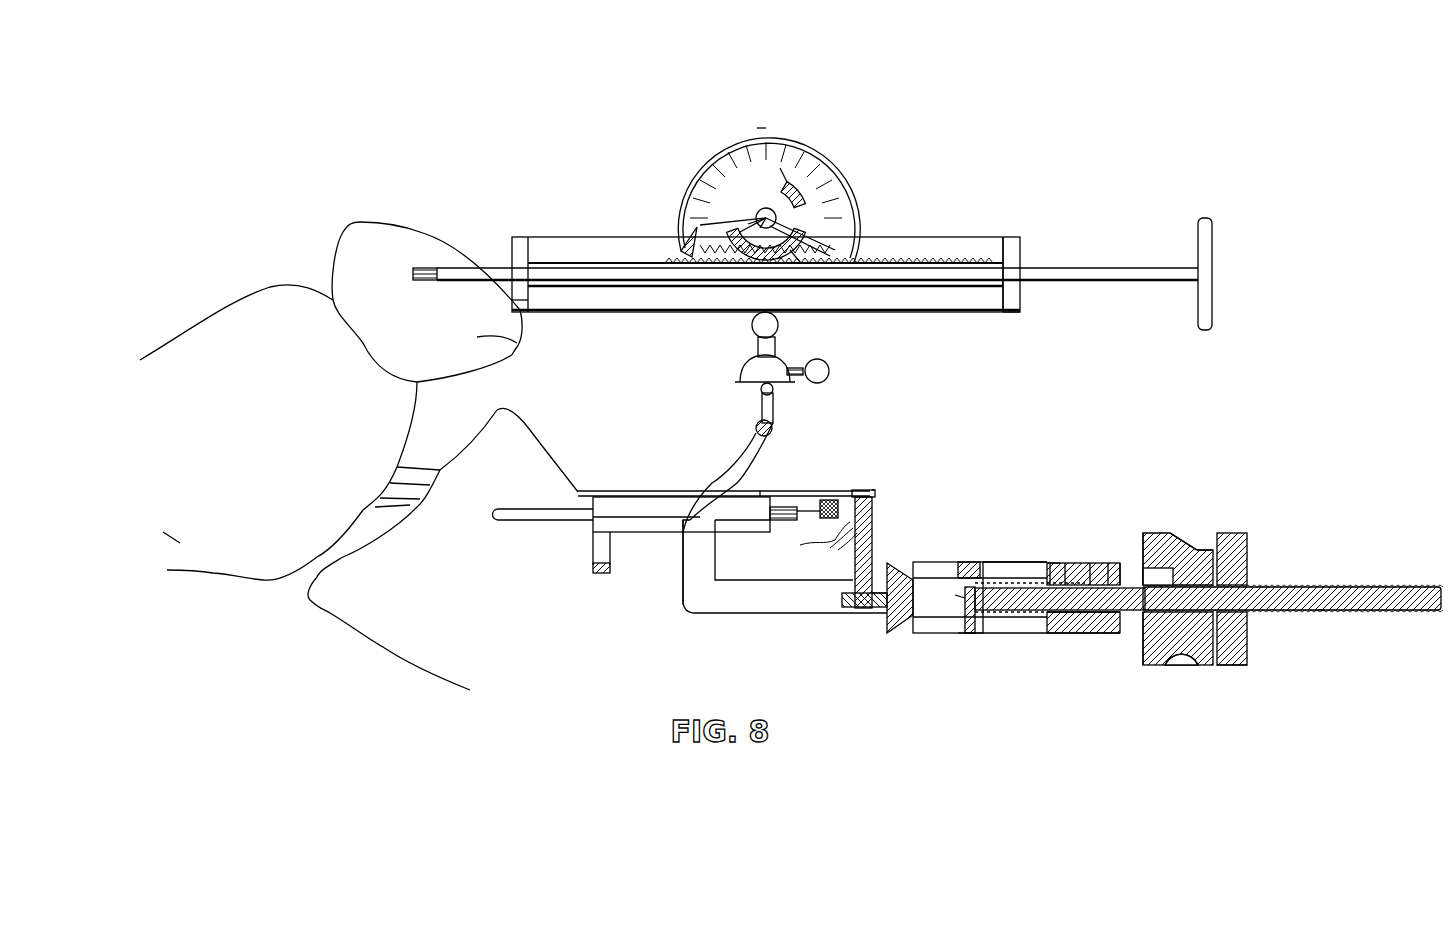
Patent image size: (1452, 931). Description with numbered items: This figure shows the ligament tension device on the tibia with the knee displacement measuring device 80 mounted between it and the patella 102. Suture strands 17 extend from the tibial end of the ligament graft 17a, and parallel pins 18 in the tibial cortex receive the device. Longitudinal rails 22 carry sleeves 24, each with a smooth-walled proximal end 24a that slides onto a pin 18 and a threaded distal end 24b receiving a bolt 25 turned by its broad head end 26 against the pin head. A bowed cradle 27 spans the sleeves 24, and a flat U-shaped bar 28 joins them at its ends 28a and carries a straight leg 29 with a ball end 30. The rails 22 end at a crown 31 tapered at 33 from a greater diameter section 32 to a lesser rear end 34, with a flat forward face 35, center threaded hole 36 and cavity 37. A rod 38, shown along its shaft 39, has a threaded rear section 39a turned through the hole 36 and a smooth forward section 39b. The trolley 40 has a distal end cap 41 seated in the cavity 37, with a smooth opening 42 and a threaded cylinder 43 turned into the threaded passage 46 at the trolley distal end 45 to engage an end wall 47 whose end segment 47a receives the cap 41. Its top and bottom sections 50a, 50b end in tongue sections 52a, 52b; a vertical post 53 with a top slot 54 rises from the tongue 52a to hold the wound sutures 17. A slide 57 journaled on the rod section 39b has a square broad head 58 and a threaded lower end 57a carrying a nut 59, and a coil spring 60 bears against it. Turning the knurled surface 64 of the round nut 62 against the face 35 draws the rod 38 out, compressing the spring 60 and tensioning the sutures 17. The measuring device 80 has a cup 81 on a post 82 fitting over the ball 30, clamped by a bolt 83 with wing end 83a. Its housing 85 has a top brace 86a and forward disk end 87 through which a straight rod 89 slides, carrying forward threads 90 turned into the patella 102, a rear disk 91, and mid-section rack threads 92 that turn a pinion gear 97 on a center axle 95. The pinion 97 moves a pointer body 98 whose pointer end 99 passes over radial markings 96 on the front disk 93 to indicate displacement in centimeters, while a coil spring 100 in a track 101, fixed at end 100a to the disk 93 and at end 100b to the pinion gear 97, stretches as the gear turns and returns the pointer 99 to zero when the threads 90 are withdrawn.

The suture strands 17 is at (605, 491).
The ligament graft 17a is at (432, 440).
The pins 18 is at (535, 509).
The longitudinal rails 22 is at (745, 600).
The sleeves 24 is at (655, 497).
The sleeve forward end 24a is at (593, 530).
The sleeve rear end 24b is at (770, 497).
The bolt 25 is at (788, 507).
The broad head end 26 is at (832, 500).
The cradle 27 is at (593, 570).
The U-shaped bar 28 is at (755, 428).
The U-shaped bar ends 28a is at (683, 540).
The straight leg 29 is at (762, 410).
The ball end 30 is at (755, 386).
The crown 31 is at (1182, 530).
The greater diameter section 32 is at (1150, 533).
The taper 33 is at (1205, 533).
The lesser diameter rear end section 34 is at (1200, 548).
The flat forward face 35 is at (1200, 665).
The center threaded hole 36 is at (1185, 665).
The cavity 37 is at (1143, 655).
The rod 38 is at (1320, 588).
The shaft 39 is at (1255, 610).
The rod threaded rear section 39a is at (1318, 610).
The rod forward section 39b is at (955, 595).
The trolley 40 is at (988, 540).
The distal end cap 41 is at (1108, 565).
The smooth walled opening 42 is at (1118, 565).
The threaded cylinder 43 is at (1090, 563).
The trolley distal end 45 is at (1065, 563).
The threaded longitudinal passage 46 is at (1050, 563).
The end wall 47 is at (1040, 575).
The end segment 47a is at (1040, 565).
The top section 50a is at (925, 562).
The bottom section 50b is at (980, 625).
The top tongue section 52a is at (877, 592).
The bottom tongue section 52b is at (887, 610).
The vertical post 53 is at (874, 495).
The slot 54 is at (862, 490).
The slide 57 is at (985, 630).
The slide lower end 57a is at (960, 635).
The broad head end 58 is at (960, 563).
The nut 59 is at (968, 632).
The coil spring 60 is at (1030, 630).
The round nut 62 is at (1247, 556).
The knurled outer surface 64 is at (1245, 665).
The knee displacement measuring device 80 is at (860, 157).
The cup 81 is at (738, 368).
The post 82 is at (752, 325).
The bolt 83 is at (792, 368).
The wing turning end 83a is at (830, 371).
The housing 85 is at (1012, 336).
The top brace 86a is at (592, 243).
The forward flat disk end 87 is at (528, 300).
The straight solid rod 89 is at (553, 275).
The threads 90 is at (418, 268).
The disk 91 is at (1212, 272).
The threads 92 is at (975, 268).
The front disk 93 is at (757, 128).
The center axle 95 is at (740, 220).
The radial markings 96 is at (762, 215).
The pinion gear 97 is at (682, 230).
The pointer body 98 is at (812, 182).
The pointer end 99 is at (798, 222).
The coil spring 100 is at (800, 258).
The coil spring end 100a is at (735, 232).
The coil spring end 100b is at (782, 168).
The track 101 is at (790, 250).
The patella 102 is at (505, 345).